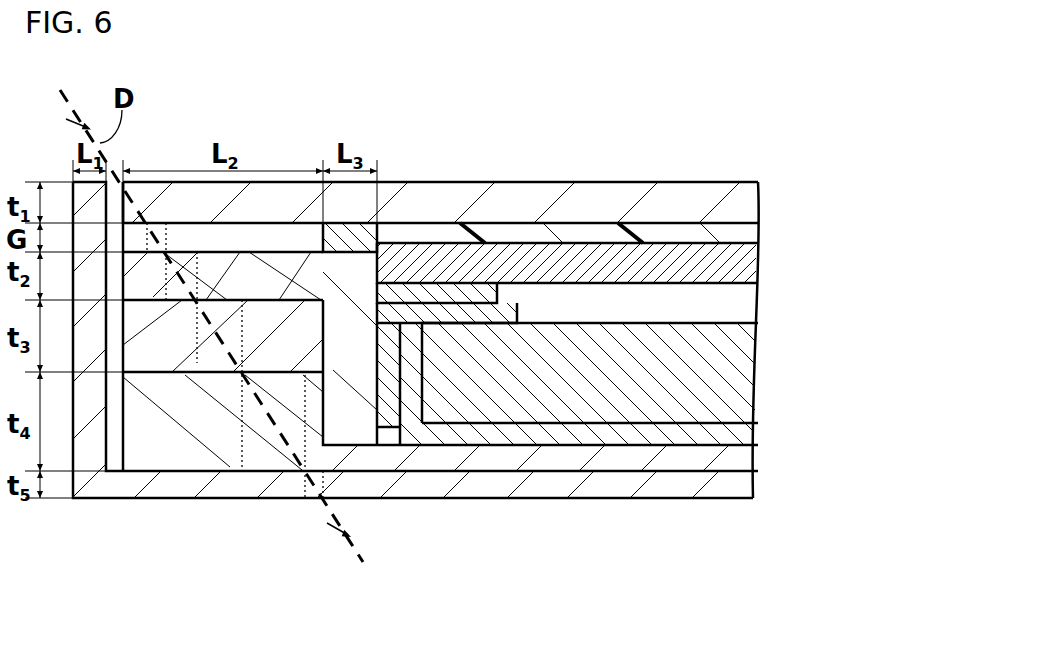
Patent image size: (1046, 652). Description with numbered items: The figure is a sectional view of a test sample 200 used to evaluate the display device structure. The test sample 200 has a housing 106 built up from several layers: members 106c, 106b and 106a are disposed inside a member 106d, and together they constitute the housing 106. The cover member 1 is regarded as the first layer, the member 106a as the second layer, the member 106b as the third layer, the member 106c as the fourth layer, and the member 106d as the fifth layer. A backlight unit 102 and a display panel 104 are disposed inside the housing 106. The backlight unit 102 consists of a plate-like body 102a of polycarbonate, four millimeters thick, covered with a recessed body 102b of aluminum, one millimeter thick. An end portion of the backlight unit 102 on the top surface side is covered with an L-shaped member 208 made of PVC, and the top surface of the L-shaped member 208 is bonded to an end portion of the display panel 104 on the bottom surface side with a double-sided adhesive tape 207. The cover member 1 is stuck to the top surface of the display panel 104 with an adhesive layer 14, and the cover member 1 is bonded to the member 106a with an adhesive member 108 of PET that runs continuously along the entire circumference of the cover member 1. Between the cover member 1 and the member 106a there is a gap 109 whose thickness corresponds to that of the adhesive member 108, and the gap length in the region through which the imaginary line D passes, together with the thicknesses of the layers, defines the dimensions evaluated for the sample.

The cover member 1 is at (619, 195).
The adhesive layer 14 is at (740, 233).
The display panel 104 is at (740, 268).
The backlight unit 102 is at (661, 387).
The plate-like body 102a is at (733, 375).
The recessed body 102b is at (730, 435).
The housing 106 is at (401, 417).
The member of second layer 106a is at (148, 270).
The member of third layer 106b is at (182, 335).
The member of fourth layer 106c is at (222, 427).
The member of fifth layer 106d is at (98, 605).
The adhesive member 108 is at (358, 237).
The gap 109 is at (302, 237).
The test sample 200 is at (724, 146).
The double-sided adhesive tape 207 is at (452, 290).
The L-shaped member 208 is at (467, 313).